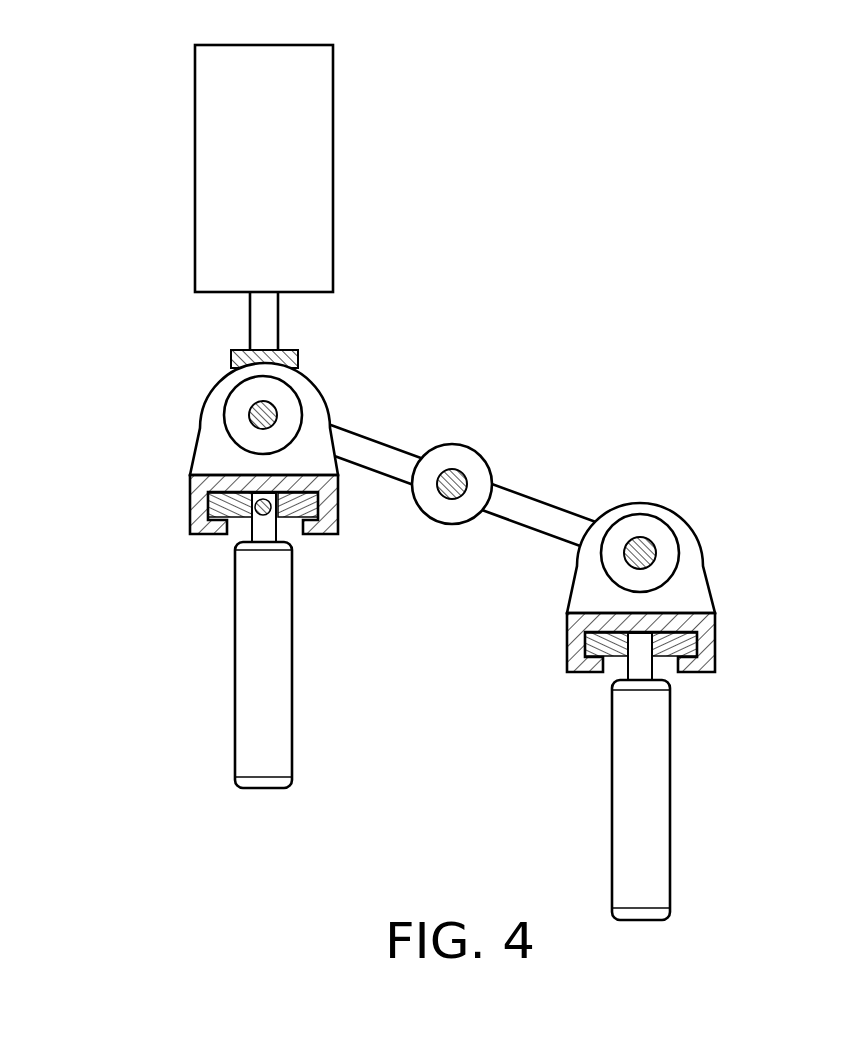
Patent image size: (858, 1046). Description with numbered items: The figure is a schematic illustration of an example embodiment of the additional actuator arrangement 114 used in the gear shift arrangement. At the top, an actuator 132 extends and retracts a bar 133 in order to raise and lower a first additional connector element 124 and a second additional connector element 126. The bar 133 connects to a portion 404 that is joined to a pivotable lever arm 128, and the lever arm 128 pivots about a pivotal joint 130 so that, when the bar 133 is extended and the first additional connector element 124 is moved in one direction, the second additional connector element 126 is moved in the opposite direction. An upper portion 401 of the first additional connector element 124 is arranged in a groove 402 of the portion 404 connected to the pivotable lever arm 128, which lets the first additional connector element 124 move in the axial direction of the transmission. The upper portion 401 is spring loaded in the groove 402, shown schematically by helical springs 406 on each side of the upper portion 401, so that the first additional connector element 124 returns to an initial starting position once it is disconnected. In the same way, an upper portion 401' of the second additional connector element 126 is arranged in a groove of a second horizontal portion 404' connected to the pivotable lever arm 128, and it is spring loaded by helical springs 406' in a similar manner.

The additional actuator arrangement 114 is at (666, 253).
The first additional connector element 124 is at (235, 667).
The second additional connector element 126 is at (672, 798).
The pivotable lever arm 128 is at (533, 513).
The pivotal joint 130 is at (462, 470).
The actuator 132 is at (333, 168).
The bar 133 is at (280, 320).
The upper portion 401 is at (209, 541).
The upper portion 401' is at (583, 681).
The groove 402 is at (295, 515).
The portion 404 is at (311, 409).
The second horizontal portion 404' is at (682, 553).
The helical springs 406 is at (255, 530).
The helical springs 406' is at (643, 638).